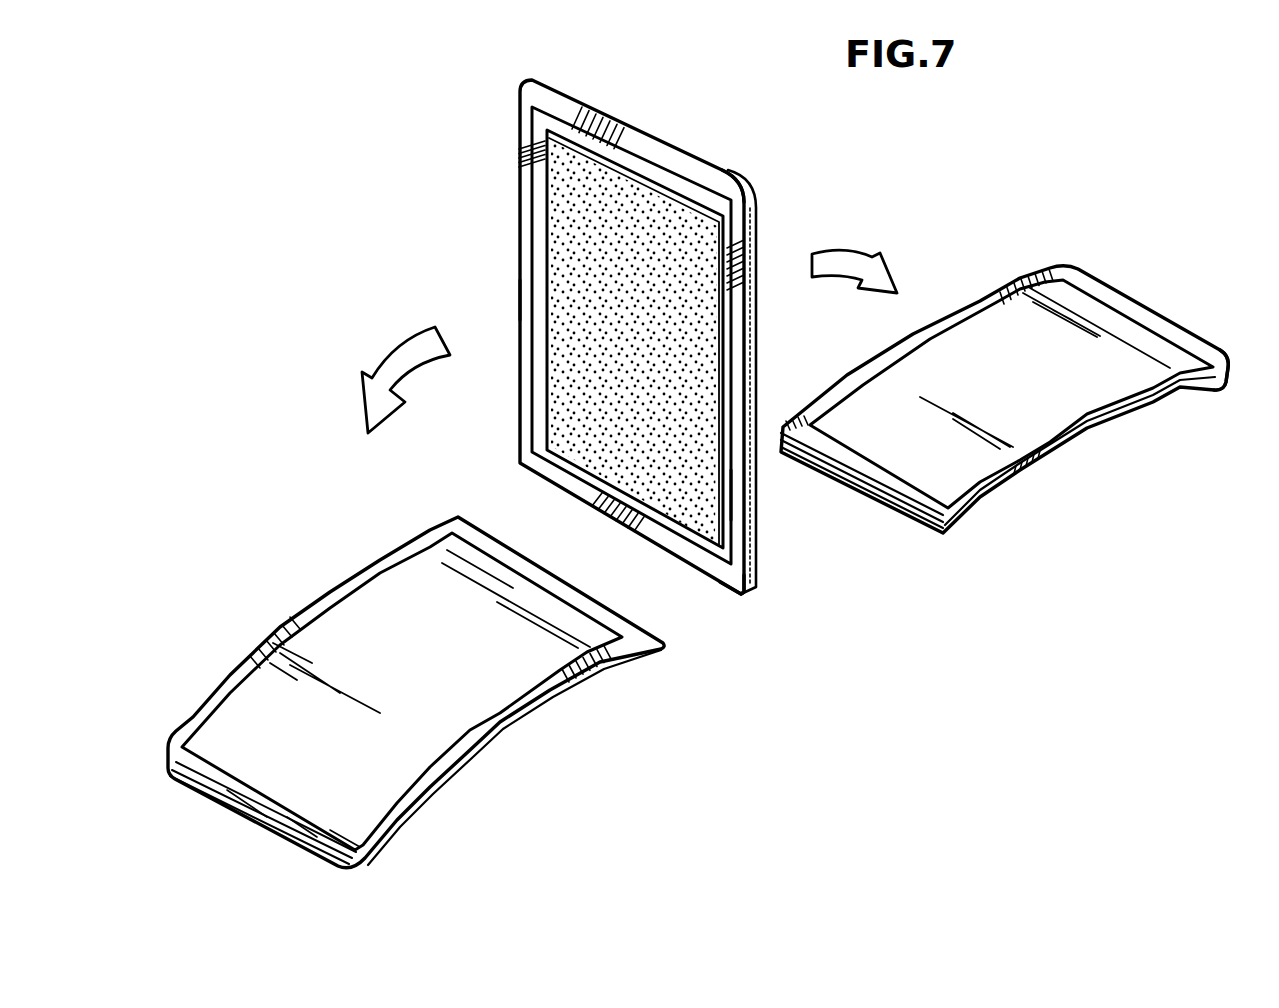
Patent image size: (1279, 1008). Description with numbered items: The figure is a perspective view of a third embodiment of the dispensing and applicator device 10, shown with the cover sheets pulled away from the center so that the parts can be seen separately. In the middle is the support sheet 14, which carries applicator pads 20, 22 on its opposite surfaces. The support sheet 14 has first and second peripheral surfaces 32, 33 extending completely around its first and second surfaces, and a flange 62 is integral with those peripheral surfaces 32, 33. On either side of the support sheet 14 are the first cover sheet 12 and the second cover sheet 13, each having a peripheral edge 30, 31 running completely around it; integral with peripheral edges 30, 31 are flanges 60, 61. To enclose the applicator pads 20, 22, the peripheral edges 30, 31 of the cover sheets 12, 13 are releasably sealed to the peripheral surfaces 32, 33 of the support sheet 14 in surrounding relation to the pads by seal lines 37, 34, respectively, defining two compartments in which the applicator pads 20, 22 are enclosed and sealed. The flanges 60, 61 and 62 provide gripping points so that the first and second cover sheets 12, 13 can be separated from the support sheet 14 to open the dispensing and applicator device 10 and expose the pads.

The dispensing and applicator device 10 is at (905, 185).
The first cover sheet 12 is at (477, 700).
The second cover sheet 13 is at (1113, 387).
The support sheet 14 is at (658, 133).
The applicator pad 20 is at (565, 233).
The applicator pad 22 is at (762, 233).
The peripheral edge 30 is at (328, 602).
The peripheral edge 31 is at (935, 323).
The first peripheral surface 32 is at (527, 298).
The second peripheral surface 33 is at (722, 171).
The seal line 34 is at (980, 487).
The seal line 37 is at (527, 144).
The flange 60 is at (272, 820).
The flange 61 is at (1178, 330).
The flange 62 is at (578, 114).